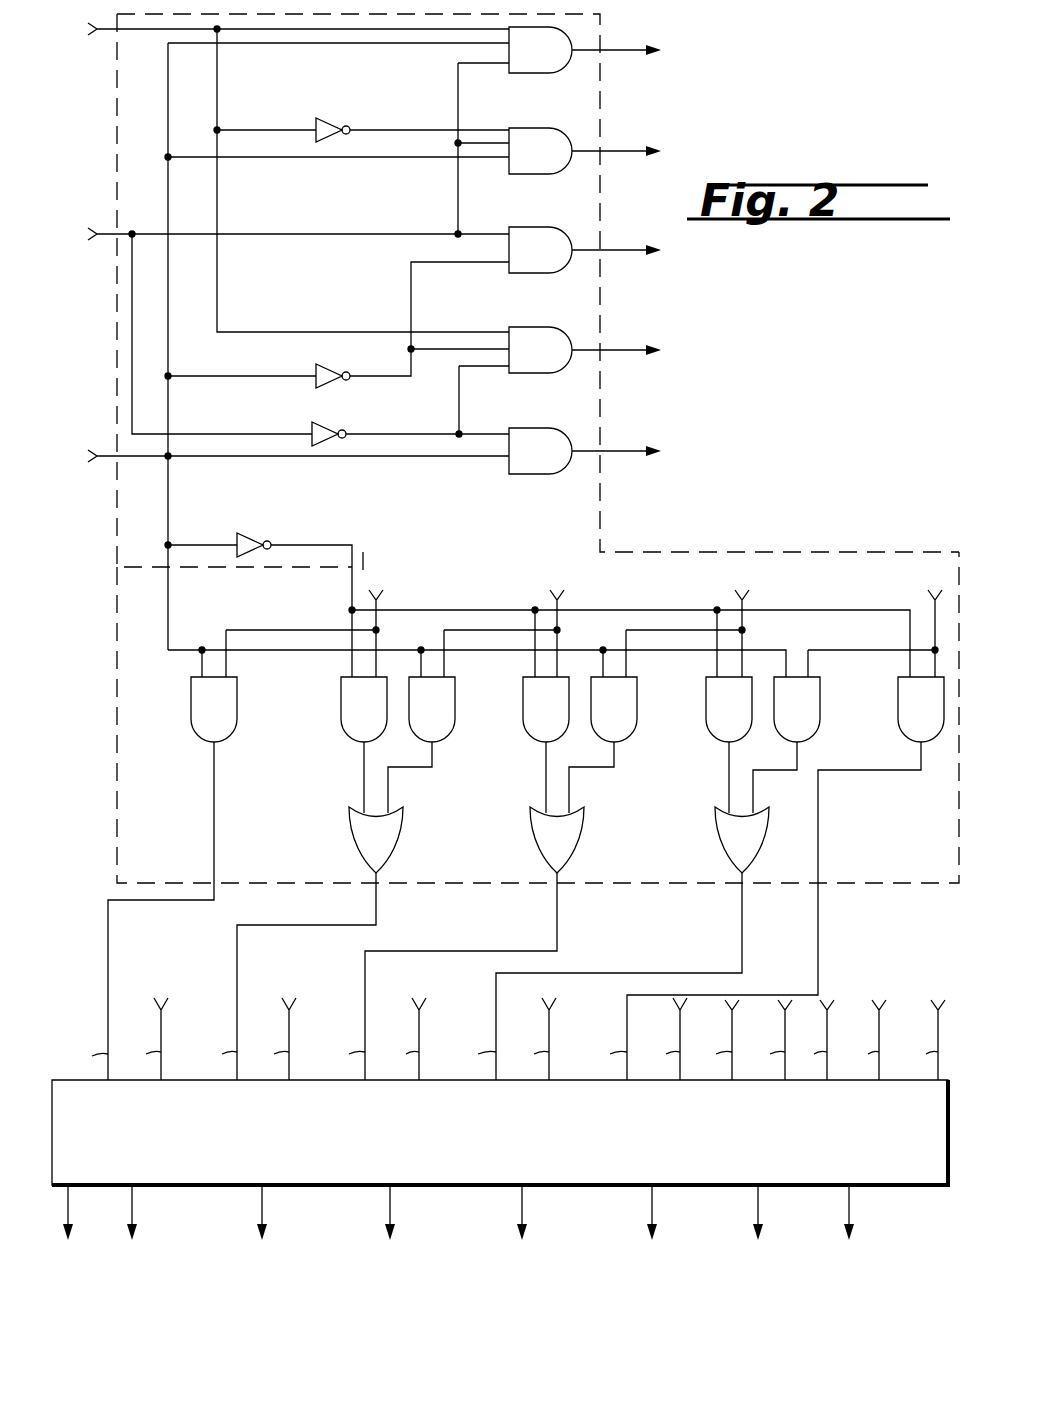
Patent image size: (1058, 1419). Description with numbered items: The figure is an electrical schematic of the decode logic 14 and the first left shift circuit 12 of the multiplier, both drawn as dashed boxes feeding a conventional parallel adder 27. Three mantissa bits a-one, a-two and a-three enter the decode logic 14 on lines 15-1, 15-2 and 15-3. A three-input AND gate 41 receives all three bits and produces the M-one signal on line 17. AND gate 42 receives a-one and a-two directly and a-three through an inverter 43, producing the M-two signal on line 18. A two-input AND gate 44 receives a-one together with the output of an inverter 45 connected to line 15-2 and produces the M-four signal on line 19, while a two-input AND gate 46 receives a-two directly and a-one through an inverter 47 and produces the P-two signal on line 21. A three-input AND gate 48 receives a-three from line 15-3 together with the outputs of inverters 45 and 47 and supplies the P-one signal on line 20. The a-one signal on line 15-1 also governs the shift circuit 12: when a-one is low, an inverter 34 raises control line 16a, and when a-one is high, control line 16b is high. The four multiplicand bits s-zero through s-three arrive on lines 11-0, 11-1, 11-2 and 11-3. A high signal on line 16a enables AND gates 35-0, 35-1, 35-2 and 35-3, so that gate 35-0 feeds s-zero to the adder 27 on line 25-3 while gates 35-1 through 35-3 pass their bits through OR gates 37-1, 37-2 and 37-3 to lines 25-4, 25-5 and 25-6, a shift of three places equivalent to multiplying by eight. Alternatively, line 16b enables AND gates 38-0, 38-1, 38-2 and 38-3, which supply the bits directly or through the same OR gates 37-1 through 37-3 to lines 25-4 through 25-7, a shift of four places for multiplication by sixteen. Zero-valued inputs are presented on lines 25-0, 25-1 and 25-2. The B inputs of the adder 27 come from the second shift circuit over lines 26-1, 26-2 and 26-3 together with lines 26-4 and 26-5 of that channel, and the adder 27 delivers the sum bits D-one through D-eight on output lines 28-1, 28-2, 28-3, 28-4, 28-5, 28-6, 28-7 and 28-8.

The left shift circuit 12 is at (108, 748).
The decode logic 14 is at (578, 534).
The a3 line 15-3 is at (100, 33).
The a2 line 15-2 is at (100, 238).
The a1 line 15-1 is at (100, 460).
The inverter 43 is at (331, 127).
The inverter 47 is at (320, 374).
The inverter 45 is at (316, 432).
The inverter 34 is at (250, 543).
The three input AND gate 41 is at (547, 76).
The AND gate 42 is at (547, 177).
The two-input AND gate 46 is at (547, 276).
The three-input AND gate 48 is at (547, 376).
The two-input AND gate 44 is at (547, 477).
The M1 line 17 is at (626, 53).
The M2 line 18 is at (626, 154).
The P2 line 21 is at (626, 253).
The P1 line 20 is at (626, 353).
The M4 line 19 is at (626, 454).
The control line 16a is at (352, 601).
The control line 16b is at (168, 626).
The line 11-3 is at (382, 607).
The line 11-2 is at (563, 607).
The line 11-1 is at (748, 607).
The line 11-0 is at (929, 607).
The AND gate 38-3 is at (214, 709).
The AND gate 38-2 is at (421, 745).
The AND gate 38-1 is at (603, 745).
The AND gate 38-0 is at (786, 745).
The AND gate 35-3 is at (364, 745).
The AND gate 35-2 is at (546, 745).
The AND gate 35-1 is at (729, 745).
The AND gate 35-0 is at (921, 709).
The OR gate 37-3 is at (376, 840).
The OR gate 37-2 is at (557, 840).
The OR gate 37-1 is at (742, 840).
The output line 25-7 is at (108, 975).
The shift product line 25-6 is at (237, 966).
The shift product line 25-5 is at (554, 936).
The shift product line 25-4 is at (742, 937).
The line 25-3 is at (818, 948).
The line 25-2 is at (732, 1040).
The line 25-1 is at (827, 1032).
The line 25-0 is at (938, 1035).
The adder input B5 26-5 is at (419, 1030).
The adder input B4 26-4 is at (549, 1036).
The line 26-3 is at (680, 1040).
The line 26-2 is at (785, 1036).
The line 26-1 is at (879, 1035).
The adder 27 is at (500, 1118).
The output line 28-8 is at (70, 1212).
The output line 28-7 is at (134, 1212).
The output line 28-6 is at (264, 1212).
The output line 28-5 is at (392, 1212).
The output line 28-4 is at (524, 1212).
The output line 28-3 is at (654, 1212).
The output line 28-2 is at (760, 1212).
The output line 28-1 is at (851, 1212).